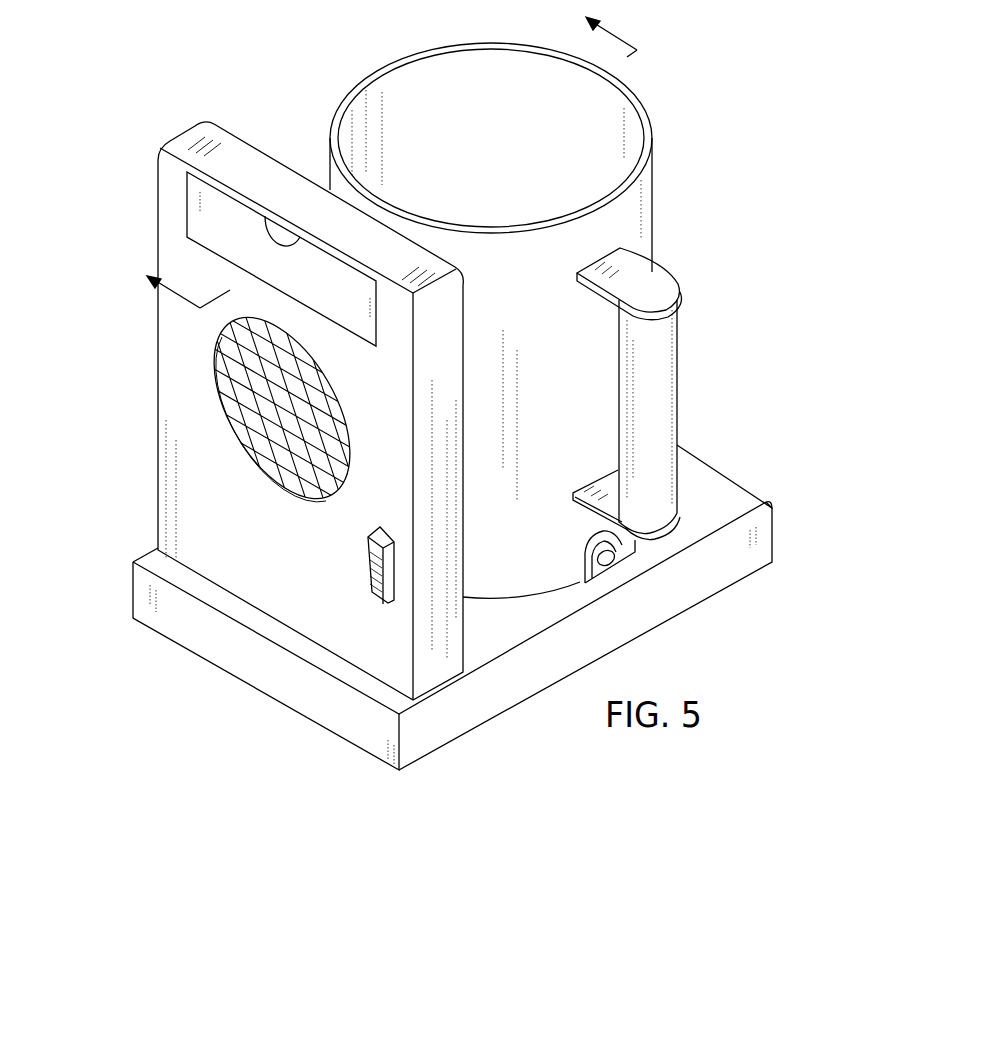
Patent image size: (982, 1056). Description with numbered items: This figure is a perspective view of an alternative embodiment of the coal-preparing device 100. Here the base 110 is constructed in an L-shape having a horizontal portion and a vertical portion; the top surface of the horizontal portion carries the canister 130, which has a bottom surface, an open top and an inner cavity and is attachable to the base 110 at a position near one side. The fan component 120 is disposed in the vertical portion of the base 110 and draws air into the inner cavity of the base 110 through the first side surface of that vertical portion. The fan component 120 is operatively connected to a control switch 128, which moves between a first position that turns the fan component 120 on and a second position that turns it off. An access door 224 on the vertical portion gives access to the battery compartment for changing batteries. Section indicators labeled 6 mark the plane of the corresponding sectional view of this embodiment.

The coal-preparing device 100 is at (488, 848).
The base 110 is at (293, 560).
The fan component 120 is at (220, 398).
The control switch 128 is at (370, 588).
The canister 130 is at (583, 378).
The access door 224 is at (187, 220).
The section line 6- 6 is at (378, 155).